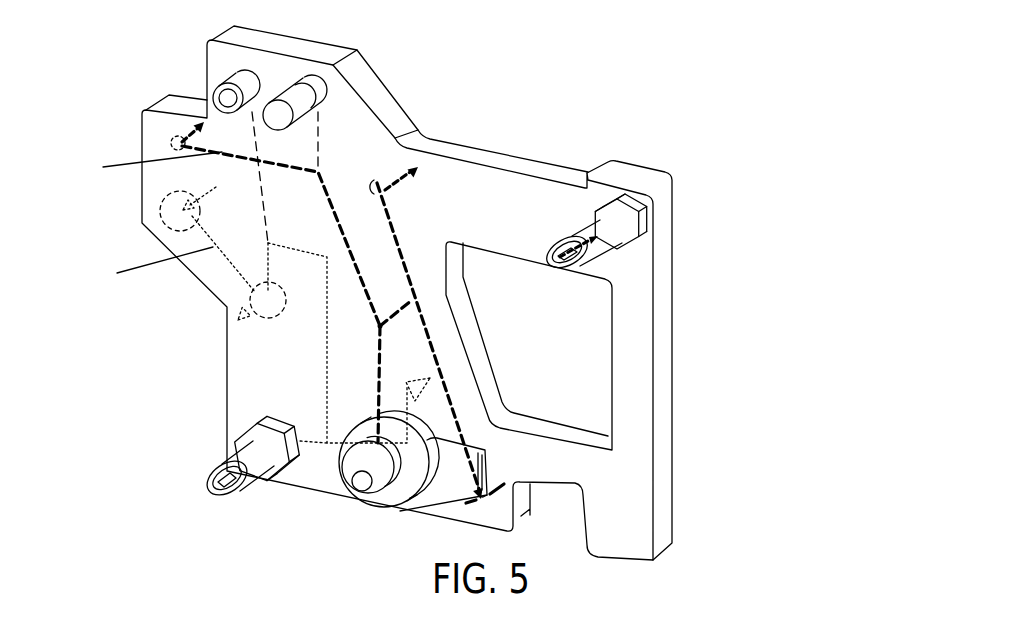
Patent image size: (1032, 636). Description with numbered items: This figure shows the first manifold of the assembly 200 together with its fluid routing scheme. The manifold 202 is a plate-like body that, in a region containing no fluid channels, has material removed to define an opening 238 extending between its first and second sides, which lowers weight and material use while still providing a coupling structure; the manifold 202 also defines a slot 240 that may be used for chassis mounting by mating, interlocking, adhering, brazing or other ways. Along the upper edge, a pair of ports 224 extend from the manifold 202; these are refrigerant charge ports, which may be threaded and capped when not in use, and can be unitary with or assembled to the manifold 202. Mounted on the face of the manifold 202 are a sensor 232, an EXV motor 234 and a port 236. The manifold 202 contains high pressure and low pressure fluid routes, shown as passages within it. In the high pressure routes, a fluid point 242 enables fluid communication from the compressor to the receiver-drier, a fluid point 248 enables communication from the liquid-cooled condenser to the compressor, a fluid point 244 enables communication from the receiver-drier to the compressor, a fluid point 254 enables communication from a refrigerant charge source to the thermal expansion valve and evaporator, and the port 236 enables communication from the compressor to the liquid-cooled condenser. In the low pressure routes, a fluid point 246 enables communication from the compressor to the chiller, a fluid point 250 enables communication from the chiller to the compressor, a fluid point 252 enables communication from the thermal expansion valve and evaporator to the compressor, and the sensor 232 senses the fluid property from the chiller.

The assembly 200 is at (752, 164).
The manifold 202 is at (672, 352).
The ports 224 is at (240, 74).
The sensor 232 is at (230, 495).
The EXV motor 234 is at (390, 507).
The port 236 is at (617, 266).
The opening 238 is at (613, 408).
The slot 240 is at (553, 490).
The fluid point 242 is at (379, 183).
The fluid point 244 is at (372, 327).
The fluid point 246 is at (398, 396).
The fluid point 248 is at (477, 510).
The fluid point 250 is at (265, 322).
The fluid point 252 is at (160, 222).
The fluid point 254 is at (165, 137).